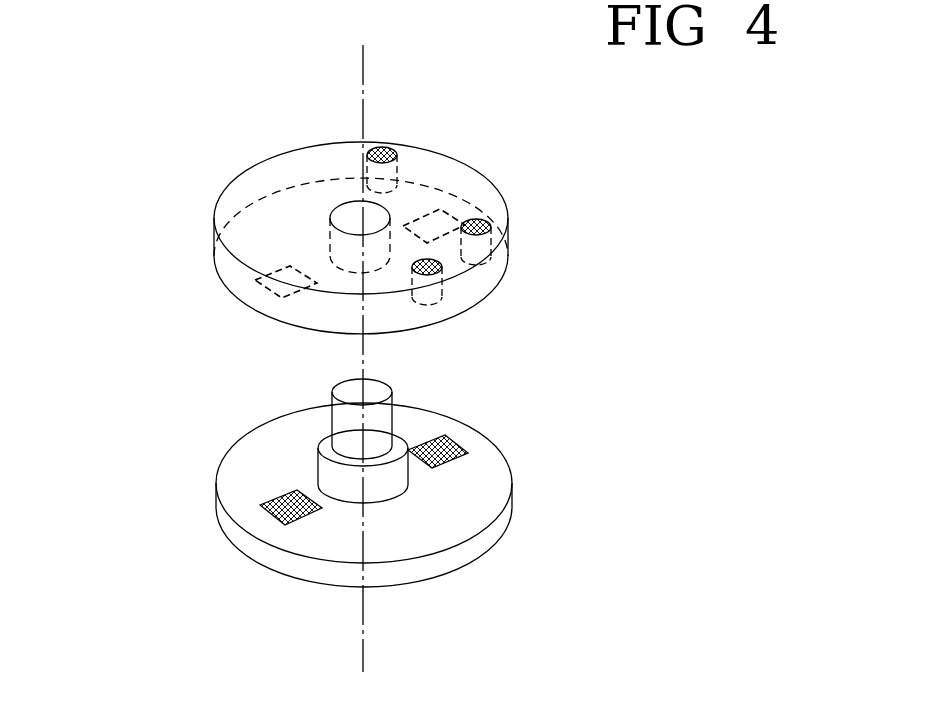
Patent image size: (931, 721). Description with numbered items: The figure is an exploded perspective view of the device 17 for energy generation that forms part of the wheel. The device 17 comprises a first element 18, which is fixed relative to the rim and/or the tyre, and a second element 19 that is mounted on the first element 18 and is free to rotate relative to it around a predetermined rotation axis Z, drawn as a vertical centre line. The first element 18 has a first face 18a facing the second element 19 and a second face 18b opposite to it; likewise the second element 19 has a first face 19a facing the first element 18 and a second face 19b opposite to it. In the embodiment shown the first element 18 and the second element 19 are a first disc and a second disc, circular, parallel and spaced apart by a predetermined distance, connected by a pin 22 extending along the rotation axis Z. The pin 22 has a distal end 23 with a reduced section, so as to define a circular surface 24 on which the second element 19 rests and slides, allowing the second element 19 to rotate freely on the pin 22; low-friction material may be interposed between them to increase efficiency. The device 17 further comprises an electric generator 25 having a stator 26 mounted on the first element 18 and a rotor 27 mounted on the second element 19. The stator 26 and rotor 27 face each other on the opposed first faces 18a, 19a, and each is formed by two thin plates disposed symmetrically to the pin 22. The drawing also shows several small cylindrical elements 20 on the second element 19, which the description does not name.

The device for energy generation 17 is at (627, 380).
The first element 18 is at (400, 521).
The first face of the first element 18a is at (430, 527).
The second face of the first element 18b is at (240, 553).
The second element 19 is at (380, 191).
The first face of the second element 19a is at (238, 280).
The second face of the second element 19b is at (295, 205).
The cylindrical pins 20 is at (382, 150).
The pin 22 is at (393, 378).
The distal end 23 is at (347, 418).
The circular surface 24 is at (353, 462).
The electric generator 25 is at (358, 312).
The stator 26 is at (254, 513).
The rotor 27 is at (280, 264).
The rotation axis Z is at (365, 648).